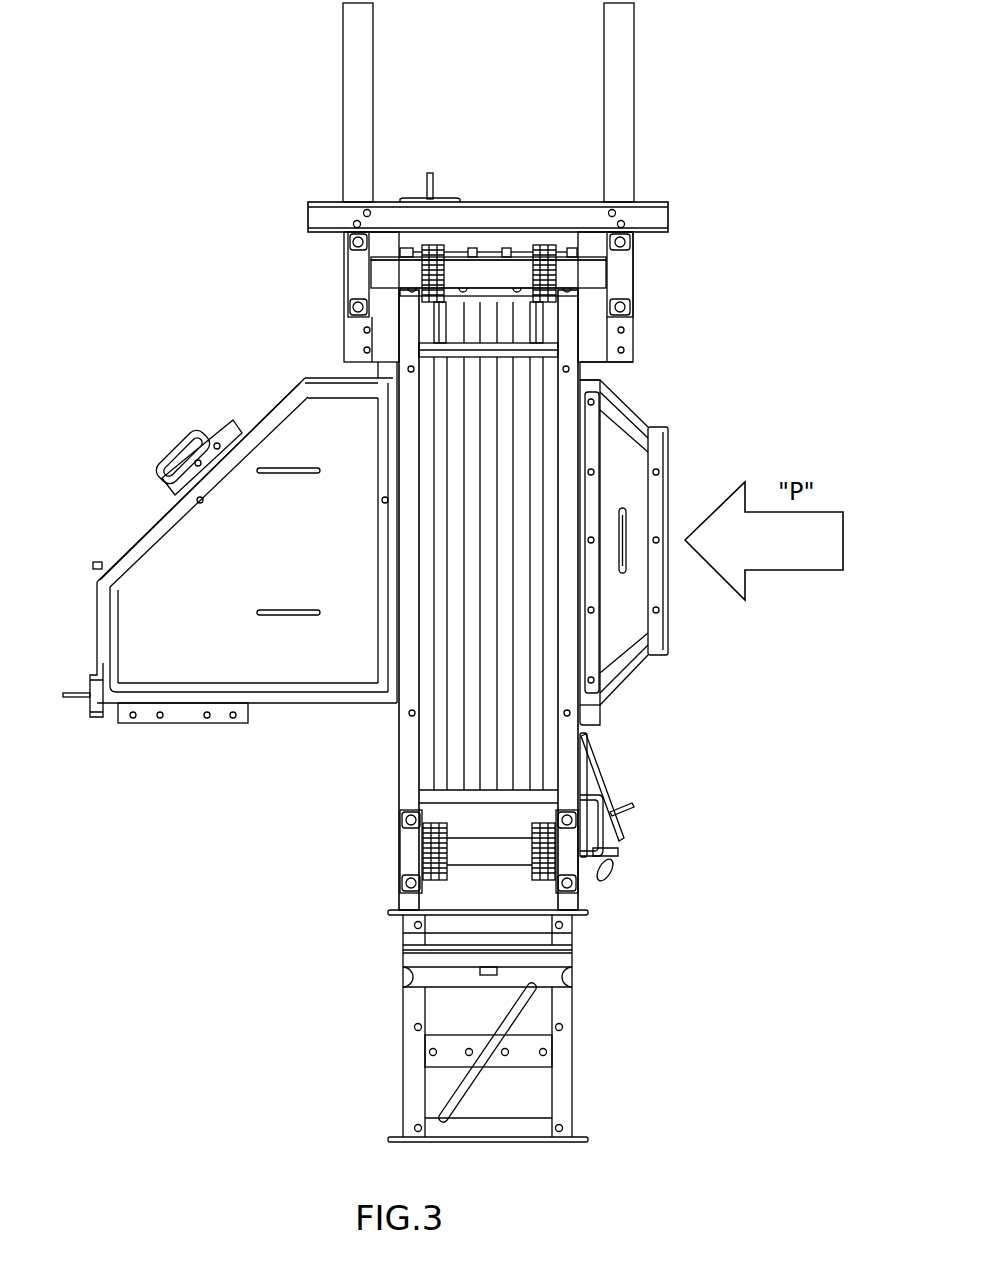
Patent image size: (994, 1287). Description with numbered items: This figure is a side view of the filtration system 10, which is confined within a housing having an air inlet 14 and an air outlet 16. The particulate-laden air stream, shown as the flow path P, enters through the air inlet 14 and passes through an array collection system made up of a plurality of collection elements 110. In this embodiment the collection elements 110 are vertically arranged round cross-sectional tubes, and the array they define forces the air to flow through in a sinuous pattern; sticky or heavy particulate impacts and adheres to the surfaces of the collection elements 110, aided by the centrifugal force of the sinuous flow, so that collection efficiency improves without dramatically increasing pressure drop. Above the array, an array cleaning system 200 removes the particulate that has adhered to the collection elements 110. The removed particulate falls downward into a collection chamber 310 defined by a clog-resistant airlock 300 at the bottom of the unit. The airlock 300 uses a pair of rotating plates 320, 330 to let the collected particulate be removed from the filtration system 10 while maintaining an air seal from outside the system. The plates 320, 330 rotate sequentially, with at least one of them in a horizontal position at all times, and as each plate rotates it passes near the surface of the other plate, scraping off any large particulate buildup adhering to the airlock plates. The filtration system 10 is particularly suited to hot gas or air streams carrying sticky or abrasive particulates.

The filtration system 10 is at (714, 106).
The air inlet 14 is at (640, 420).
The air outlet 16 is at (185, 570).
The collection elements 110 is at (428, 400).
The array cleaning system 200 is at (532, 348).
The clog-resistant airlock 300 is at (478, 1026).
The collection chamber 310 is at (470, 893).
The rotating plate 320 is at (526, 963).
The rotating plate 330 is at (536, 1008).